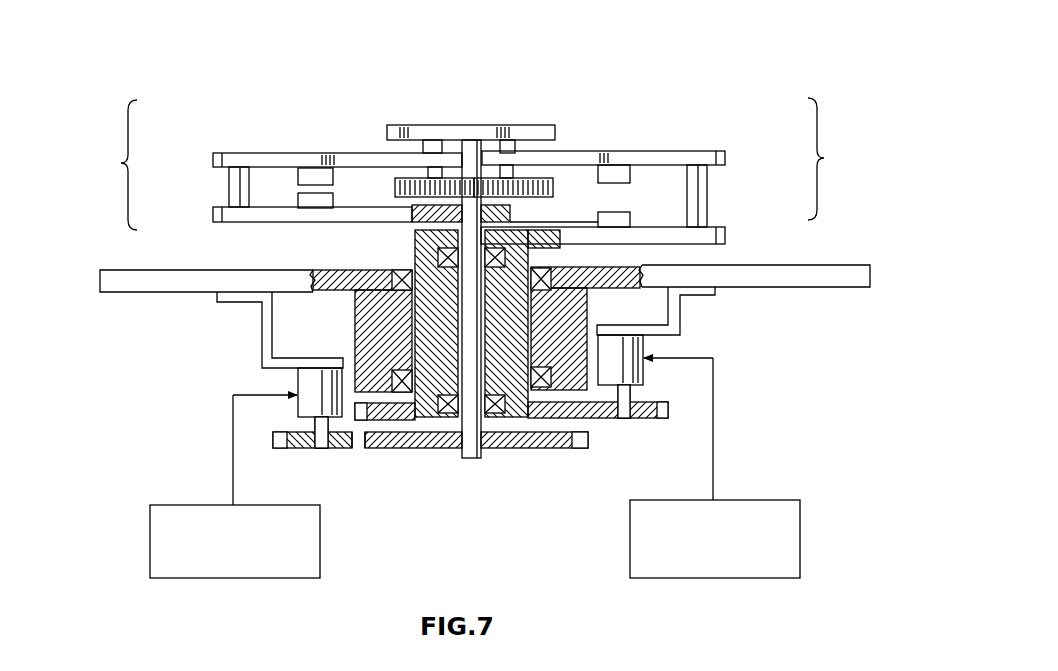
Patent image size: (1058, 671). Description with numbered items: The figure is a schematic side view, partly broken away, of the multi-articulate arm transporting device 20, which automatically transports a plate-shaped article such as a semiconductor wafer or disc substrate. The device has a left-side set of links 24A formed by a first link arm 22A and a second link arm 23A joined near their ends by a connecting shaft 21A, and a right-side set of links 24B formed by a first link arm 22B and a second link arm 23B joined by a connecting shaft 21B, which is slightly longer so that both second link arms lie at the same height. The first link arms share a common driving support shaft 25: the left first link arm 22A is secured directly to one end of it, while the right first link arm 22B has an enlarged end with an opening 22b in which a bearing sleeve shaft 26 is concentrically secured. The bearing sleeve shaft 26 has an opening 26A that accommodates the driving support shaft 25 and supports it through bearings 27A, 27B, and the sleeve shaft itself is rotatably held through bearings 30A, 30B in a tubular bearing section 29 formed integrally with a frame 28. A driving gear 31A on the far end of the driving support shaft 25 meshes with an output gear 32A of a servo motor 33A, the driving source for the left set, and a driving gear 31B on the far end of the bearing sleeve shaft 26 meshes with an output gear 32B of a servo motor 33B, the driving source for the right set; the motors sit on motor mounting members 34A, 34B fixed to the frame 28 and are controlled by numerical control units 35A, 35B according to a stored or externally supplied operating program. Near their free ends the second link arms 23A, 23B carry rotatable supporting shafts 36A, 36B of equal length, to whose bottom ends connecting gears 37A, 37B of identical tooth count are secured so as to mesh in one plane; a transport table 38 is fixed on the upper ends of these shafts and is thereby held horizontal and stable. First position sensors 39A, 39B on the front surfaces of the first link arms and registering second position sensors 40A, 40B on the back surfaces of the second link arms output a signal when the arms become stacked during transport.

The multi-articulate arm transporting device 20 is at (722, 62).
The connecting shaft 21A is at (238, 190).
The connecting shaft 21B is at (700, 182).
The first link arm 22A is at (258, 222).
The first link arm 22B is at (660, 240).
The opening 22b is at (512, 214).
The second link arm 23A is at (262, 160).
The second link arm 23B is at (700, 158).
The left-side set of links 24A is at (106, 173).
The right-side set of links 24B is at (896, 173).
The driving support shaft 25 is at (474, 460).
The bearing sleeve shaft 26 is at (527, 430).
The opening 26A is at (417, 405).
The bearing 27A is at (432, 262).
The bearing 27B is at (512, 380).
The frame 28 is at (812, 272).
The tubular bearing section 29 is at (355, 320).
The bearing 30A is at (395, 275).
The bearing 30B is at (402, 425).
The driving gear 31A is at (548, 442).
The driving gear 31B is at (588, 446).
The output gear 32A is at (300, 448).
The output gear 32B is at (645, 418).
The servo motor 33A is at (300, 380).
The servo motor 33B is at (645, 345).
The motor mounting member 34A is at (262, 318).
The motor mounting member 34B is at (672, 310).
The numerical control unit 35A is at (200, 512).
The numerical control unit 35B is at (755, 505).
The supporting shaft 36A is at (420, 138).
The supporting shaft 36B is at (530, 147).
The connecting gear 37A is at (391, 188).
The connecting gear 37B is at (557, 183).
The transport table 38 is at (476, 127).
The first position sensor 39A is at (330, 195).
The first position sensor 39B is at (612, 220).
The second position sensor 40A is at (318, 170).
The second position sensor 40B is at (628, 170).